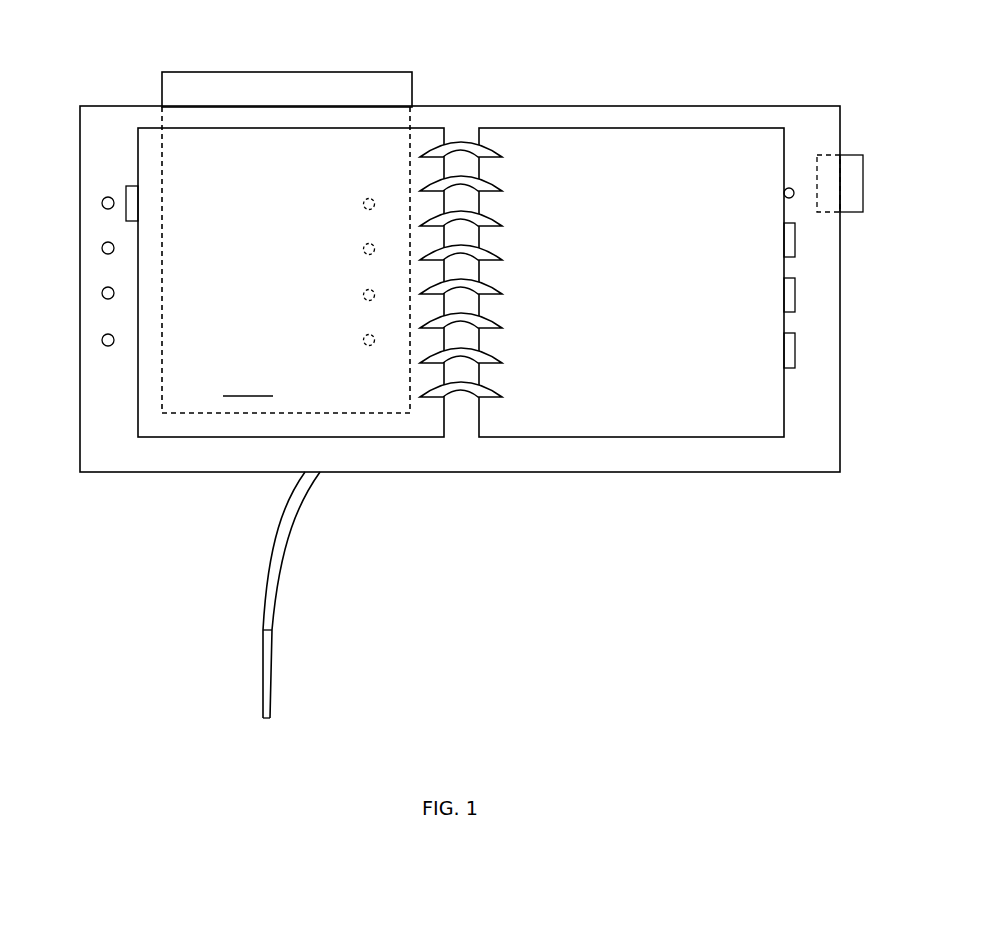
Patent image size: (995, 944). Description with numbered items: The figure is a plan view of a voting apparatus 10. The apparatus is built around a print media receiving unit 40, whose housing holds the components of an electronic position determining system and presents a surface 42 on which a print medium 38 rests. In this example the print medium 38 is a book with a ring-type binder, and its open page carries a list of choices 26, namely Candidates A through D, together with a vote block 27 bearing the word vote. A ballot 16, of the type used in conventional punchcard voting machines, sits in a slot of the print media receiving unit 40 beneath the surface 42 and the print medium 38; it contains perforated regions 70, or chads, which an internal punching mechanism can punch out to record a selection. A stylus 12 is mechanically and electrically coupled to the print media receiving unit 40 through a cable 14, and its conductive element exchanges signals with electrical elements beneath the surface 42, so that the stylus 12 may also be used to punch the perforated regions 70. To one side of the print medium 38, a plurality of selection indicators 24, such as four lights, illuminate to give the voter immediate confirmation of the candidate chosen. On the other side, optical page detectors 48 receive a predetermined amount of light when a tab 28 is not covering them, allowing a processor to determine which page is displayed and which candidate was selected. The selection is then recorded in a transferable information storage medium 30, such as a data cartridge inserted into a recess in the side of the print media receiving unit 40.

The voting apparatus 10 is at (606, 580).
The stylus 12 is at (205, 595).
The cable 14 is at (273, 553).
The ballot 16 is at (288, 72).
The selection indicators 24 is at (102, 203).
The choices 26 is at (263, 188).
The vote block 27 is at (210, 386).
The tab 28 is at (135, 185).
The transferable information storage medium 30 is at (850, 155).
The print medium 38 is at (635, 128).
The print media receiving unit 40 is at (462, 105).
The surface 42 is at (545, 460).
The optical page detectors 48 is at (793, 186).
The perforated regions 70 is at (367, 197).